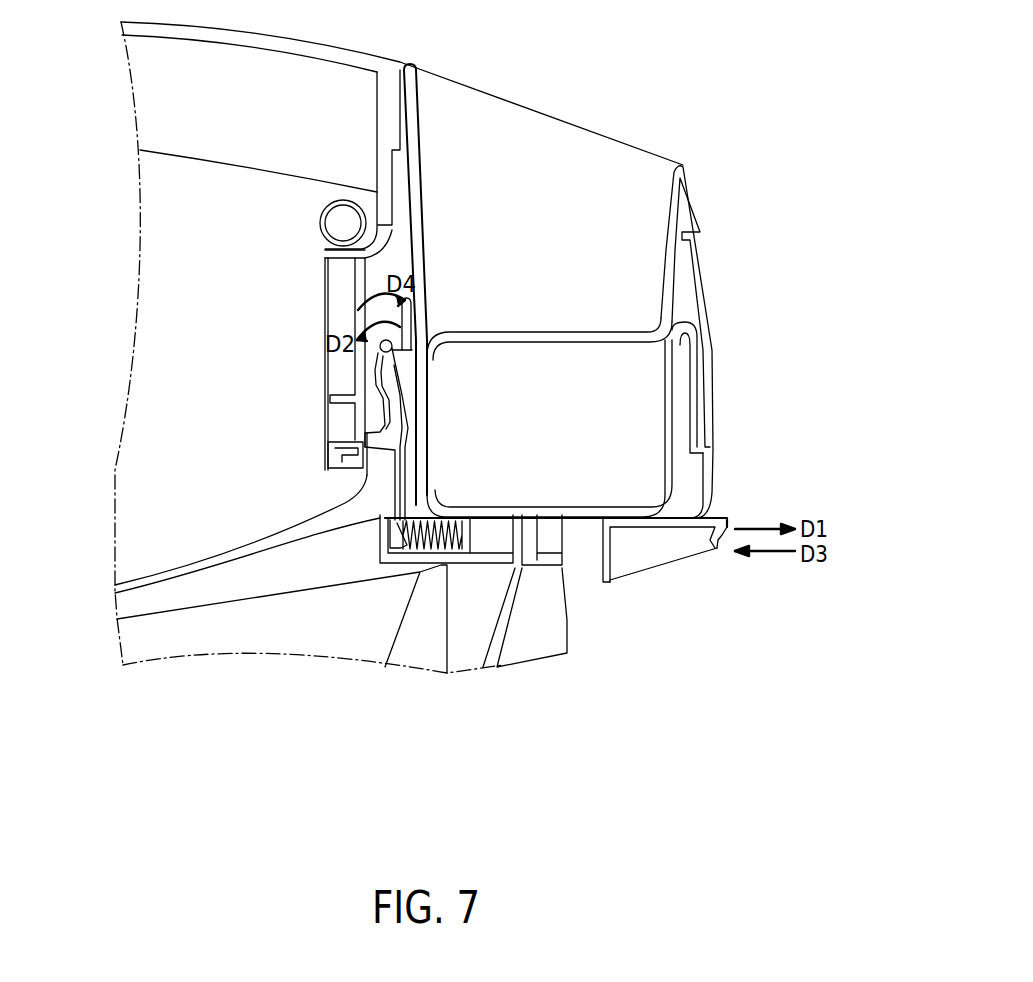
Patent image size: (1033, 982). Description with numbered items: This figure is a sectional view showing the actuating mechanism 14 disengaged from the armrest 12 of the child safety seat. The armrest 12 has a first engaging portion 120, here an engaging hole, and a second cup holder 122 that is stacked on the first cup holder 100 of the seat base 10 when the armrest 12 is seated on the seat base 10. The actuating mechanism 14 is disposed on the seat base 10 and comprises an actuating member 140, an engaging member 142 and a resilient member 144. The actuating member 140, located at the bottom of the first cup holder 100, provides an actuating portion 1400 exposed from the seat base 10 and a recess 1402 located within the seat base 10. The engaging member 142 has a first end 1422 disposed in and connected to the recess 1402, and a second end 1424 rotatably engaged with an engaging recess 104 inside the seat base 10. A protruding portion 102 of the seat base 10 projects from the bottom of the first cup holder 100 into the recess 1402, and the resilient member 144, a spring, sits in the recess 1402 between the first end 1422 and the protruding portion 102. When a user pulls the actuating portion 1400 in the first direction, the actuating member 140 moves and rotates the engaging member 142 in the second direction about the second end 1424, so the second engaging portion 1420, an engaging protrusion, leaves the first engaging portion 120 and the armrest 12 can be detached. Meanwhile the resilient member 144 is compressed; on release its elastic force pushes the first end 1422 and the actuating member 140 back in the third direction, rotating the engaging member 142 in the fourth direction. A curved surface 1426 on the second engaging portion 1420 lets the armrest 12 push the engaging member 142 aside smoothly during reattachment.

The seat base 10 is at (568, 630).
The armrest 12 is at (150, 508).
The actuating mechanism 14 is at (694, 569).
The first cup holder 100 is at (678, 393).
The protruding portion 102 is at (470, 535).
The engaging recess 104 is at (390, 345).
The first engaging portion 120 is at (317, 423).
The second cup holder 122 is at (624, 150).
The actuating member 140 is at (730, 530).
The engaging member 142 is at (407, 452).
The resilient member 144 is at (457, 553).
The actuating portion 1400 is at (635, 563).
The recess 1402 is at (404, 561).
The second engaging portion 1420 is at (367, 440).
The first end 1422 is at (393, 545).
The second end 1424 is at (378, 351).
The curved surface 1426 is at (377, 400).